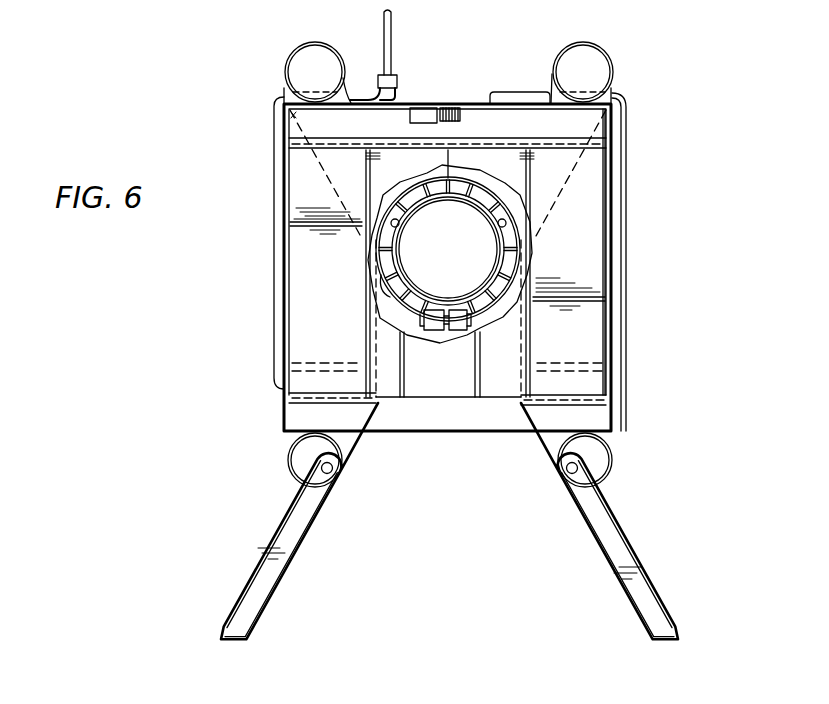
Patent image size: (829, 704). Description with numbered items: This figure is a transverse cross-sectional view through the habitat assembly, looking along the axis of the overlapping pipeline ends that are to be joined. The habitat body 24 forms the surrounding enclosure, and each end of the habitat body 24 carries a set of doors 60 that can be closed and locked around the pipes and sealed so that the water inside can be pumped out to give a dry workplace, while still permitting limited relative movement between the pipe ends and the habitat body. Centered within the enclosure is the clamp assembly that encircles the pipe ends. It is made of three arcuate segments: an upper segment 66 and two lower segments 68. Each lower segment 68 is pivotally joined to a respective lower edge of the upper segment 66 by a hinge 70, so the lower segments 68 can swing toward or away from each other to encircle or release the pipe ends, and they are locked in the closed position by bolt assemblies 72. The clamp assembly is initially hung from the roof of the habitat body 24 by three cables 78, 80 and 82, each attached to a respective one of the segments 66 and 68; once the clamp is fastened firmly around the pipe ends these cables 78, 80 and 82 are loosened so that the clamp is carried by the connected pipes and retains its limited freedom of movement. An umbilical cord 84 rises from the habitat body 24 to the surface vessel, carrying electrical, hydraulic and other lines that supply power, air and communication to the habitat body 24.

The habitat body 24 is at (475, 103).
The doors 60 is at (433, 385).
The upper segment 66 is at (485, 204).
The lower segments 68 is at (397, 295).
The hinge 70 is at (392, 226).
The bolt assemblies 72 is at (430, 326).
The cable 78 is at (450, 178).
The cable 80 is at (600, 133).
The cable 82 is at (322, 176).
The umbilical cord 84 is at (383, 33).